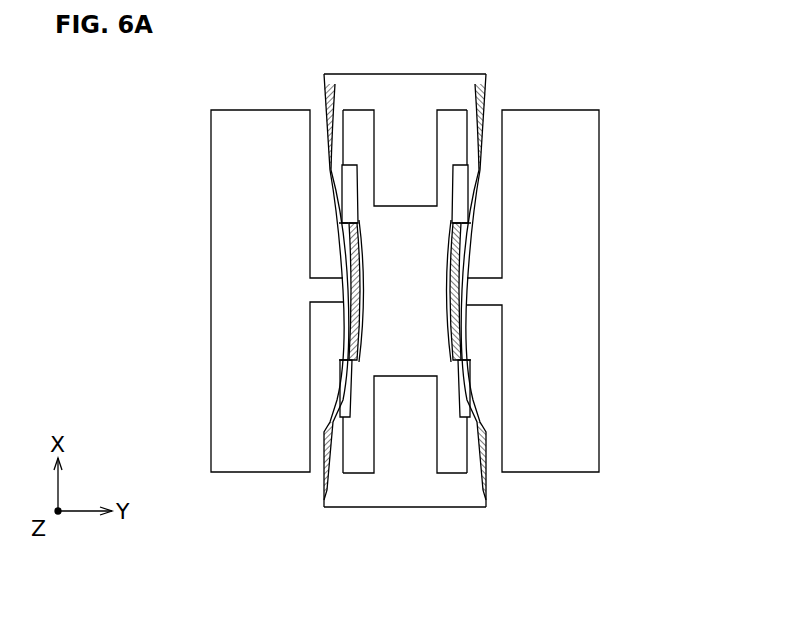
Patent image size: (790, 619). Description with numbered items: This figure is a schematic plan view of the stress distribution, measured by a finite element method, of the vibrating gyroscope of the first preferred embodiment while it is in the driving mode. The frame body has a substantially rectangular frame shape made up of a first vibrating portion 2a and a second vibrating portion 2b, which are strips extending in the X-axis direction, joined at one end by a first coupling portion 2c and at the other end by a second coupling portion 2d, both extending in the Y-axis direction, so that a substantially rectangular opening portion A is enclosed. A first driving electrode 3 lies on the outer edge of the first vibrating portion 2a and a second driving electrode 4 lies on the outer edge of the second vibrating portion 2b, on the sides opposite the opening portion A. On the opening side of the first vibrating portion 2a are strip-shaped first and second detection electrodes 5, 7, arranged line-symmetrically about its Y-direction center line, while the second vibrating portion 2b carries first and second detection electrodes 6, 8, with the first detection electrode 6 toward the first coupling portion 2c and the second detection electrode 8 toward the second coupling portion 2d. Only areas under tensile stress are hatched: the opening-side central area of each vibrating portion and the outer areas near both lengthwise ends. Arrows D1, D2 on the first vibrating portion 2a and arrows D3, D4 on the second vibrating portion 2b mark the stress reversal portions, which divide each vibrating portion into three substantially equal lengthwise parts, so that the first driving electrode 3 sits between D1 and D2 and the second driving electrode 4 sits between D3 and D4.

The first vibrating portion 2a is at (340, 382).
The second vibrating portion 2b is at (470, 378).
The first coupling portion 2c is at (406, 87).
The second coupling portion 2d is at (407, 497).
The first driving electrode 3 is at (348, 289).
The second driving electrode 4 is at (468, 290).
The first detection electrode 5 is at (349, 402).
The first detection electrode 6 is at (457, 178).
The second detection electrode 7 is at (353, 178).
The second detection electrode 8 is at (461, 402).
The opening portion A is at (418, 305).
The stress reversal portion D1 is at (330, 175).
The stress reversal portion D2 is at (332, 402).
The stress reversal portion D3 is at (482, 177).
The stress reversal portion D4 is at (480, 420).